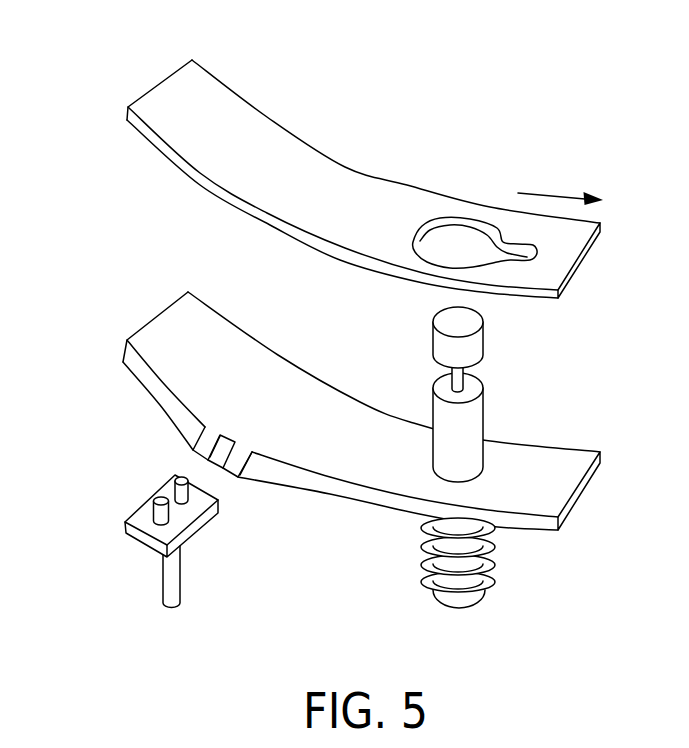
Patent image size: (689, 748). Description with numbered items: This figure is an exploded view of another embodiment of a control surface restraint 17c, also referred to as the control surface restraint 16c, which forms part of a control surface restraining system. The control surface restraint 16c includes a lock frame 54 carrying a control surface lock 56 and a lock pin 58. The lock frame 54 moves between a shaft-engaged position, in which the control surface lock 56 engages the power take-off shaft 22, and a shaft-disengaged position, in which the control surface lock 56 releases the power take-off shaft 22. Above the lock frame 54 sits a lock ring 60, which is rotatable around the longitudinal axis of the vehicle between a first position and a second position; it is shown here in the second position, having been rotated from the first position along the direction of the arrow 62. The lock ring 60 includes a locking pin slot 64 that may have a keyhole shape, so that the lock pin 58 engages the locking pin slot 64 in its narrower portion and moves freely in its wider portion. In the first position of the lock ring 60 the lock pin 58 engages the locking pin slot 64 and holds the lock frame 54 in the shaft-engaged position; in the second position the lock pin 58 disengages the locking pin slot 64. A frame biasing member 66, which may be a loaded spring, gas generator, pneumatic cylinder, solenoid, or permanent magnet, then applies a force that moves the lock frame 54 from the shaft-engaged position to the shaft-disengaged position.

The control surface restraint 16c is at (104, 82).
The lock ring 60 is at (331, 194).
The arrow 62 is at (560, 194).
The locking pin slot 64 is at (460, 245).
The control surface restraint 17c is at (326, 540).
The lock frame 54 is at (168, 333).
The control surface lock 56 is at (206, 442).
The lock pin 58 is at (468, 345).
The frame biasing member 66 is at (497, 567).
The power take-off shaft 22 is at (142, 518).